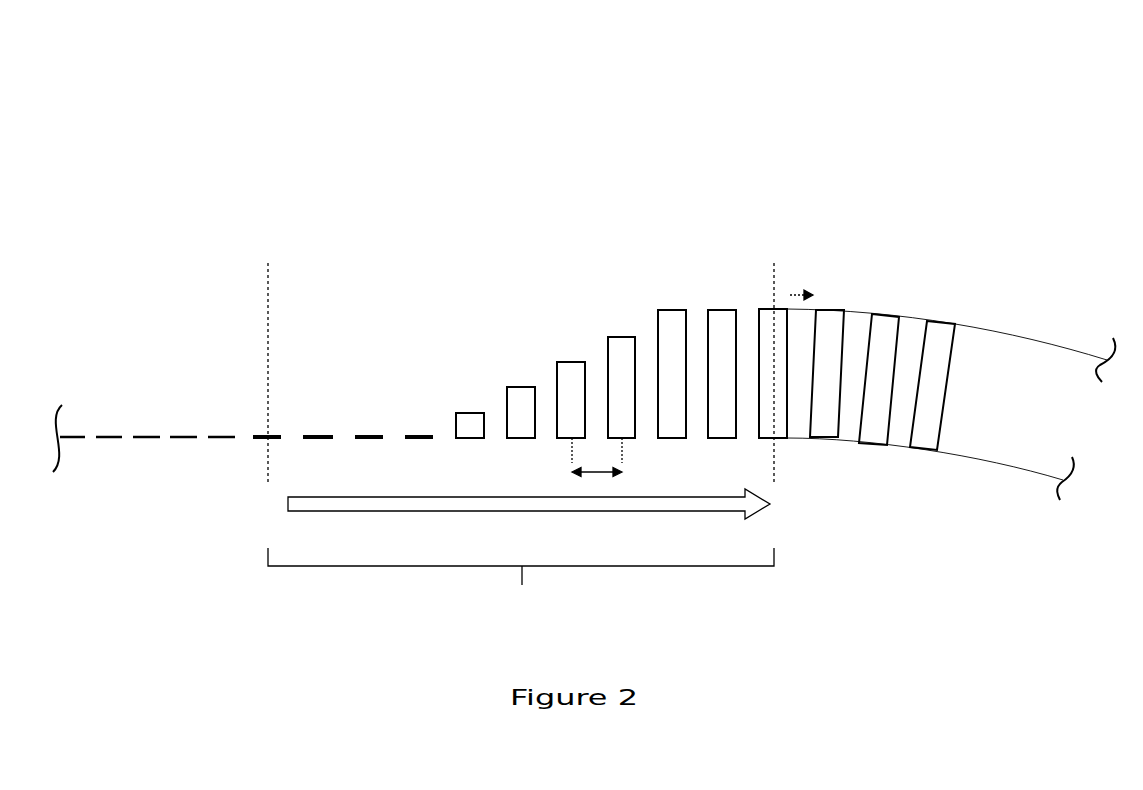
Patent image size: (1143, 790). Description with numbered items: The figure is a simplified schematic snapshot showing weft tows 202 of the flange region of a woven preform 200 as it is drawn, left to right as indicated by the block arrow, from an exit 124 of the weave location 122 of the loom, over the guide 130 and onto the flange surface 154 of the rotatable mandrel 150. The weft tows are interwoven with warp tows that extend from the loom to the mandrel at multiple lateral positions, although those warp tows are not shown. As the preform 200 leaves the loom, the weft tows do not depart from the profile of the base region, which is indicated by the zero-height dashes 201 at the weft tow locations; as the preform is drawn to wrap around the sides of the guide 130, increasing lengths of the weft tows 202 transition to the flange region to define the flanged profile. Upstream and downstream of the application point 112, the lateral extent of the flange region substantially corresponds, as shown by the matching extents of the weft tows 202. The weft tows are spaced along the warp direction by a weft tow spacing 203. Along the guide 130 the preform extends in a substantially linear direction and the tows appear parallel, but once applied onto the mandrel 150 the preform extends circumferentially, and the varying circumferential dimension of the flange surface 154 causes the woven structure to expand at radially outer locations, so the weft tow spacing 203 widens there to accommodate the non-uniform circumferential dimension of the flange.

The woven preform 200 is at (302, 146).
The weave location 122 is at (145, 428).
The exit 124 is at (268, 460).
The thin segments 201 is at (322, 425).
The weft tows 202 is at (520, 383).
The weft tow spacing 203 is at (597, 457).
The application point 112 is at (775, 273).
The rotatable mandrel 150 is at (798, 440).
The flange surface 154 is at (968, 365).
The guide 130 is at (521, 558).